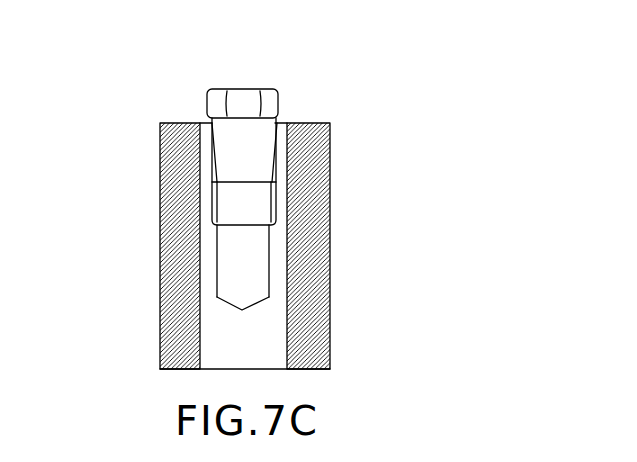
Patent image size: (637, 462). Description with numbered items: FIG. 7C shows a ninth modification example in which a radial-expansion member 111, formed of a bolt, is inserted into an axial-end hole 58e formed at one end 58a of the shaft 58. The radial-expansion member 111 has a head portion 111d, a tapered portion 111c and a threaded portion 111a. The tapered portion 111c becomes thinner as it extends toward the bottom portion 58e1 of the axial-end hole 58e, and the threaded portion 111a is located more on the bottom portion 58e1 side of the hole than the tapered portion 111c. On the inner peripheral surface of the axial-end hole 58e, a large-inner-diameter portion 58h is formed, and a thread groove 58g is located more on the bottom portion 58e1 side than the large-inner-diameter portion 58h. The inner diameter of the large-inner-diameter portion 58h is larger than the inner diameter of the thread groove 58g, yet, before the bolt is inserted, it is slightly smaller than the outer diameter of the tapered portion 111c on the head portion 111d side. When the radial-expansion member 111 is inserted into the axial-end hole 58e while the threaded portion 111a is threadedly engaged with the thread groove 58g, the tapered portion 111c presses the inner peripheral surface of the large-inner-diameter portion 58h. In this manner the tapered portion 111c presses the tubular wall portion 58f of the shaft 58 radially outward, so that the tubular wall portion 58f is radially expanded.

The shaft 58 is at (256, 341).
The one end of the shaft 58a is at (279, 121).
The axial-end hole 58e is at (265, 281).
The bottom portion of the axial-end hole 58e1 is at (256, 303).
The tubular wall portion 58f is at (203, 193).
The thread groove 58g is at (266, 207).
The large-inner-diameter portion 58h is at (266, 161).
The radial-expansion member 111 is at (245, 88).
The threaded portion 111a is at (239, 192).
The tapered portion 111c is at (230, 142).
The head portion 111d is at (270, 88).